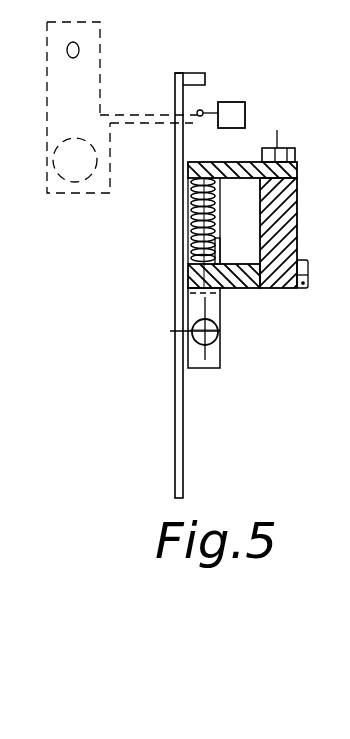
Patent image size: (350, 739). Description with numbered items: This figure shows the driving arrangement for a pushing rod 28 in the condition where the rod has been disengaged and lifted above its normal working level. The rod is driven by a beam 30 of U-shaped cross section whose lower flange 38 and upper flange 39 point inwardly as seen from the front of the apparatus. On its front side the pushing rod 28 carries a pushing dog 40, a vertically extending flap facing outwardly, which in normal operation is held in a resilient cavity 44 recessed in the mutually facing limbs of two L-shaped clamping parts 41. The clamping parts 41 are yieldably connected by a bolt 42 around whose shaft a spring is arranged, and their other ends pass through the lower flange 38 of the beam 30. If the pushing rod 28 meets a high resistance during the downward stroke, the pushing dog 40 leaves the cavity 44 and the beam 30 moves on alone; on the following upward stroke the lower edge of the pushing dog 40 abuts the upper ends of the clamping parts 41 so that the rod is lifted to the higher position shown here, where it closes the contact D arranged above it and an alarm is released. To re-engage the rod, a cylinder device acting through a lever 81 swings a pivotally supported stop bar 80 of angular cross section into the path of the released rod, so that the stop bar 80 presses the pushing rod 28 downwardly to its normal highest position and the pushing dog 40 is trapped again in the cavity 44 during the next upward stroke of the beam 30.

The pushing rod 28 is at (175, 434).
The beam 30 is at (299, 192).
The lower flange 38 is at (240, 284).
The upper flange 39 is at (239, 162).
The pushing dog 40 is at (200, 240).
The L-shaped clamping part 41 is at (213, 368).
The bolt 42 is at (193, 335).
The resilient cavity 44 is at (219, 335).
The stop bar 80 is at (151, 112).
The lever 81 is at (55, 120).
The contact D is at (240, 103).